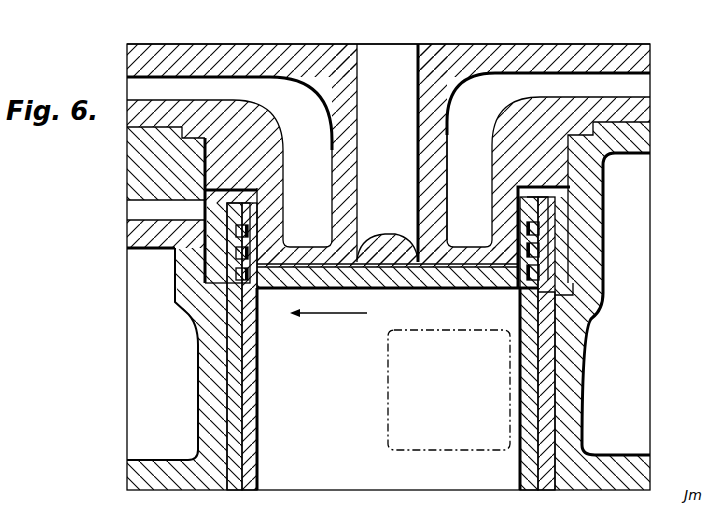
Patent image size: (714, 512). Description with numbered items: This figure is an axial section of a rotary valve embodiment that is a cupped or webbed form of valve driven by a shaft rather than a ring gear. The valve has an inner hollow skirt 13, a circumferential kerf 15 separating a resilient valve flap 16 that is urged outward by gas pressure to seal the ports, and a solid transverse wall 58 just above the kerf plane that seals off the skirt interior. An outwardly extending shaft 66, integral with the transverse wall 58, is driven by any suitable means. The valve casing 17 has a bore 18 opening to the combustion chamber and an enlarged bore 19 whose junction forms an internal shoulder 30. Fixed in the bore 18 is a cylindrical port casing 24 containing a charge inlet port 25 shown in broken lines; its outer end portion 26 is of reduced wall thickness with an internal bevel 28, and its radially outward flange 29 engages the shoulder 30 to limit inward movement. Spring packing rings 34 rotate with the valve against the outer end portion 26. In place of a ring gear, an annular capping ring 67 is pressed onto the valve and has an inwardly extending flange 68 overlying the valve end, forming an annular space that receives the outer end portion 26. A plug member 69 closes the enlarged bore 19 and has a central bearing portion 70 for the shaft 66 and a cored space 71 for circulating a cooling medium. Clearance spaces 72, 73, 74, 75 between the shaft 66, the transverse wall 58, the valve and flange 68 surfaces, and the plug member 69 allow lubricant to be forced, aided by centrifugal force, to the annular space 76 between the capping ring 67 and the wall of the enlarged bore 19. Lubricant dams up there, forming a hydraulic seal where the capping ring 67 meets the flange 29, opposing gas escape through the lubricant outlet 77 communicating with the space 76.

The skirt 13 is at (248, 358).
The kerf 15 is at (405, 288).
The valve flap 16 is at (527, 393).
The valve casing 17 is at (585, 312).
The bore 18 is at (555, 427).
The enlarged bore 19 is at (573, 222).
The port casing 24 is at (235, 421).
The charge inlet port 25 is at (388, 413).
The outer end portion of port casing 26 is at (233, 246).
The internal bevel 28 is at (229, 221).
The flange 29 is at (217, 296).
The internal shoulder 30 is at (213, 298).
The spring packing rings 34 is at (245, 253).
The transverse wall 58 is at (452, 278).
The shaft 66 is at (400, 77).
The capping ring 67 is at (557, 247).
The flange of capping ring 68 is at (565, 190).
The plug member 69 is at (510, 63).
The bearing portion 70 is at (423, 153).
The cored space 71 is at (573, 88).
The clearance space 72 is at (420, 118).
The clearance space 73 is at (467, 263).
The clearance space 74 is at (517, 218).
The clearance space 75 is at (533, 183).
The annular space 76 is at (568, 267).
The lubricant outlet 77 is at (147, 213).